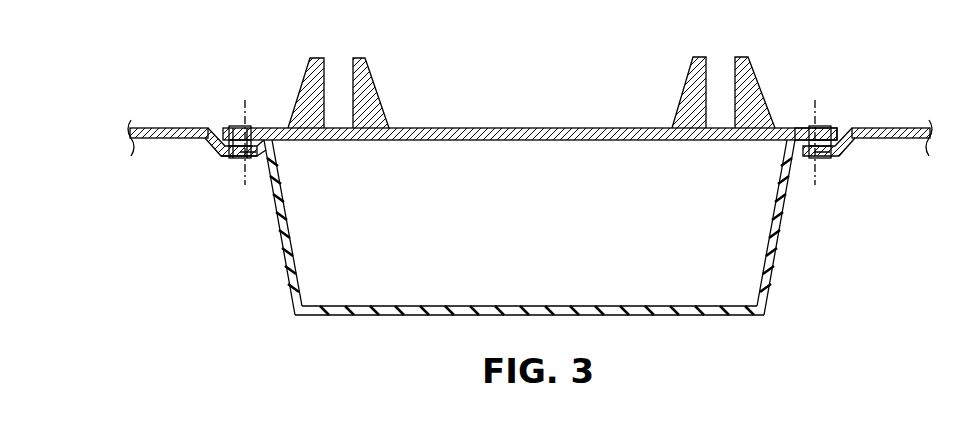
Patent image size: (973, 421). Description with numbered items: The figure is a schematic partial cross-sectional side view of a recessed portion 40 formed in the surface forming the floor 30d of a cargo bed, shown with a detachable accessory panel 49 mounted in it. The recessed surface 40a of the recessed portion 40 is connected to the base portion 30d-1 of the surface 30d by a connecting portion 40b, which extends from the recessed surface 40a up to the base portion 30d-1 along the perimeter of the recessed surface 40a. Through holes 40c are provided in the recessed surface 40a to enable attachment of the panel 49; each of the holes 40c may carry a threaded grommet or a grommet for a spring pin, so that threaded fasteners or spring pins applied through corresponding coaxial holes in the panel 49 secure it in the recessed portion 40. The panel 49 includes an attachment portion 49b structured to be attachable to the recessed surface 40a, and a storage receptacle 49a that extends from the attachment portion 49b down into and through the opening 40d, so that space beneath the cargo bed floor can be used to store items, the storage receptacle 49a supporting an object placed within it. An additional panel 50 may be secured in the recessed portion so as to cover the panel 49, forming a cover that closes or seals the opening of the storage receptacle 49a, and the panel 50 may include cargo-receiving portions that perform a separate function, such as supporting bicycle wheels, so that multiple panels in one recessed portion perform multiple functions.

The surface forming floor of the cargo bed 30d is at (150, 124).
The base portion 30d-1 is at (177, 128).
The detachable accessory panel 49 is at (265, 140).
The storage receptacle 49a is at (613, 277).
The attachment portion 49b is at (789, 140).
The panel 50 is at (364, 53).
The recessed portion 40 is at (216, 166).
The recessed surface 40a is at (226, 160).
The connecting portion 40b is at (211, 150).
The through holes 40c is at (248, 158).
The opening 40d is at (261, 160).